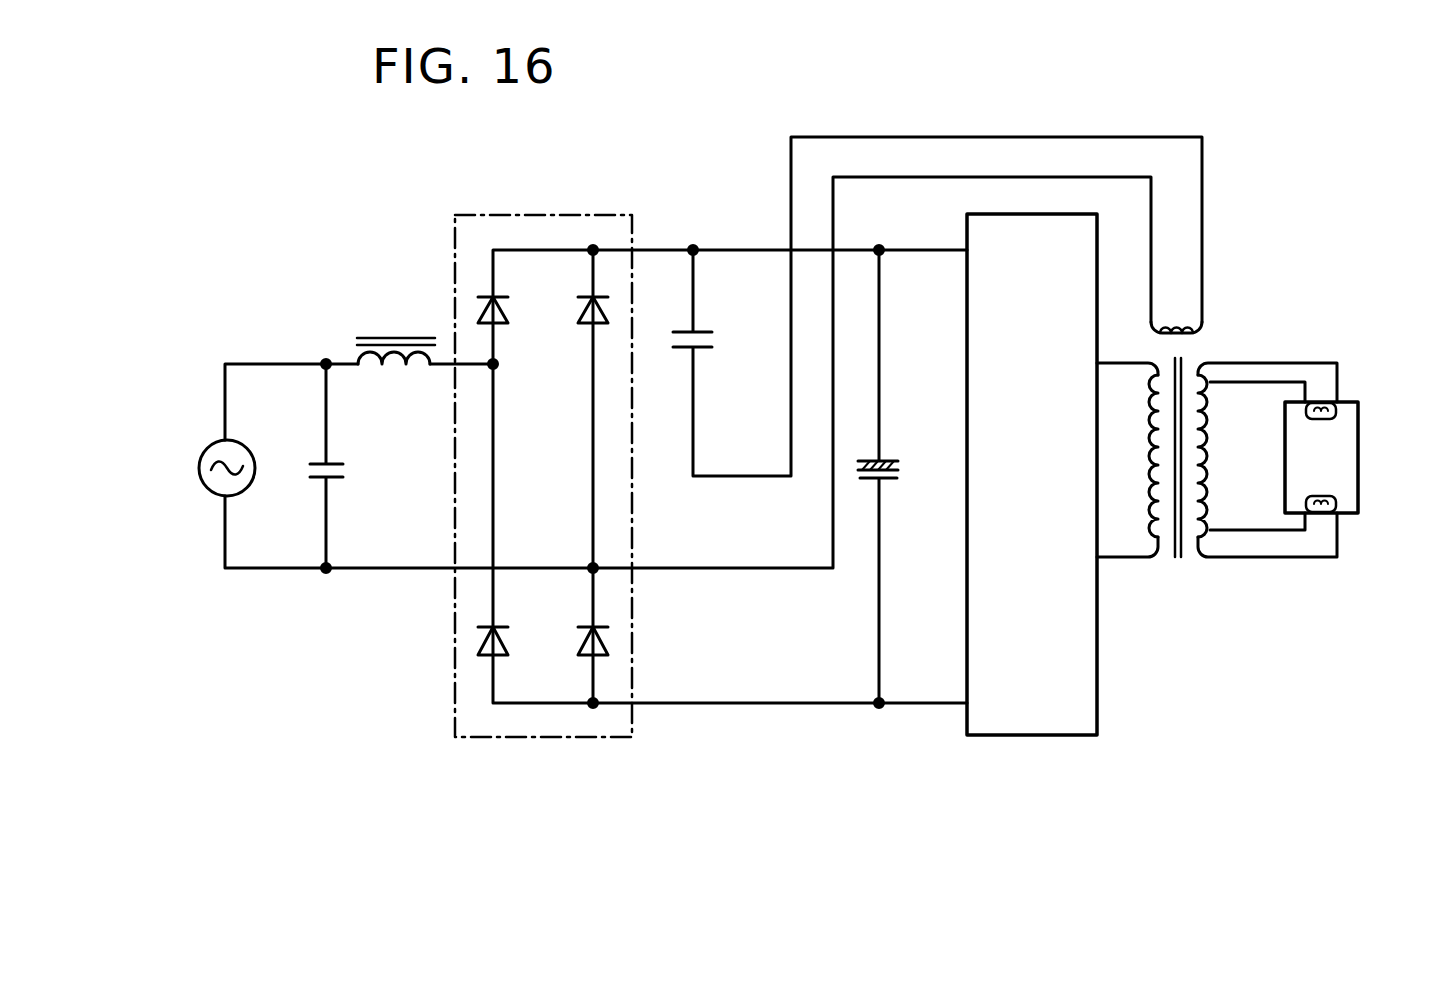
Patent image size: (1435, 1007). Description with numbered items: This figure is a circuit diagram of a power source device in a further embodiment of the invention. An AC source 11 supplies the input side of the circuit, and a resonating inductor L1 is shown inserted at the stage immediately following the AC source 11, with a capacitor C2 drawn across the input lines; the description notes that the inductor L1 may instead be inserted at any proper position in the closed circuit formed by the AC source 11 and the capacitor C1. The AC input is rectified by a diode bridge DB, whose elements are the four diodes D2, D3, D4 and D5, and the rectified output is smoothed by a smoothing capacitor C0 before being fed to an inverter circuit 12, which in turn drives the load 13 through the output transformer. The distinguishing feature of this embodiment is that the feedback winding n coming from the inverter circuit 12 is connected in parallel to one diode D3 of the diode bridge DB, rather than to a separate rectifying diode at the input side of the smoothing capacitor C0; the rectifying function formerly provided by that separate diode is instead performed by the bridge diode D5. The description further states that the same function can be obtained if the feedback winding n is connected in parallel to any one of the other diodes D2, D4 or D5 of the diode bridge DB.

The AC source 11 is at (200, 458).
The inverter circuit 12 is at (1097, 703).
The load 13 is at (1358, 448).
The resonating inductor L1 is at (396, 332).
The capacitor C1 is at (937, 306).
The capacitor C2 is at (352, 466).
The smoothing capacitor C0 is at (903, 477).
The diode D2 is at (514, 290).
The diode D3 is at (573, 336).
The diode D4 is at (513, 621).
The diode D5 is at (572, 663).
The diode bridge DB is at (711, 510).
The feedback winding n is at (1176, 304).